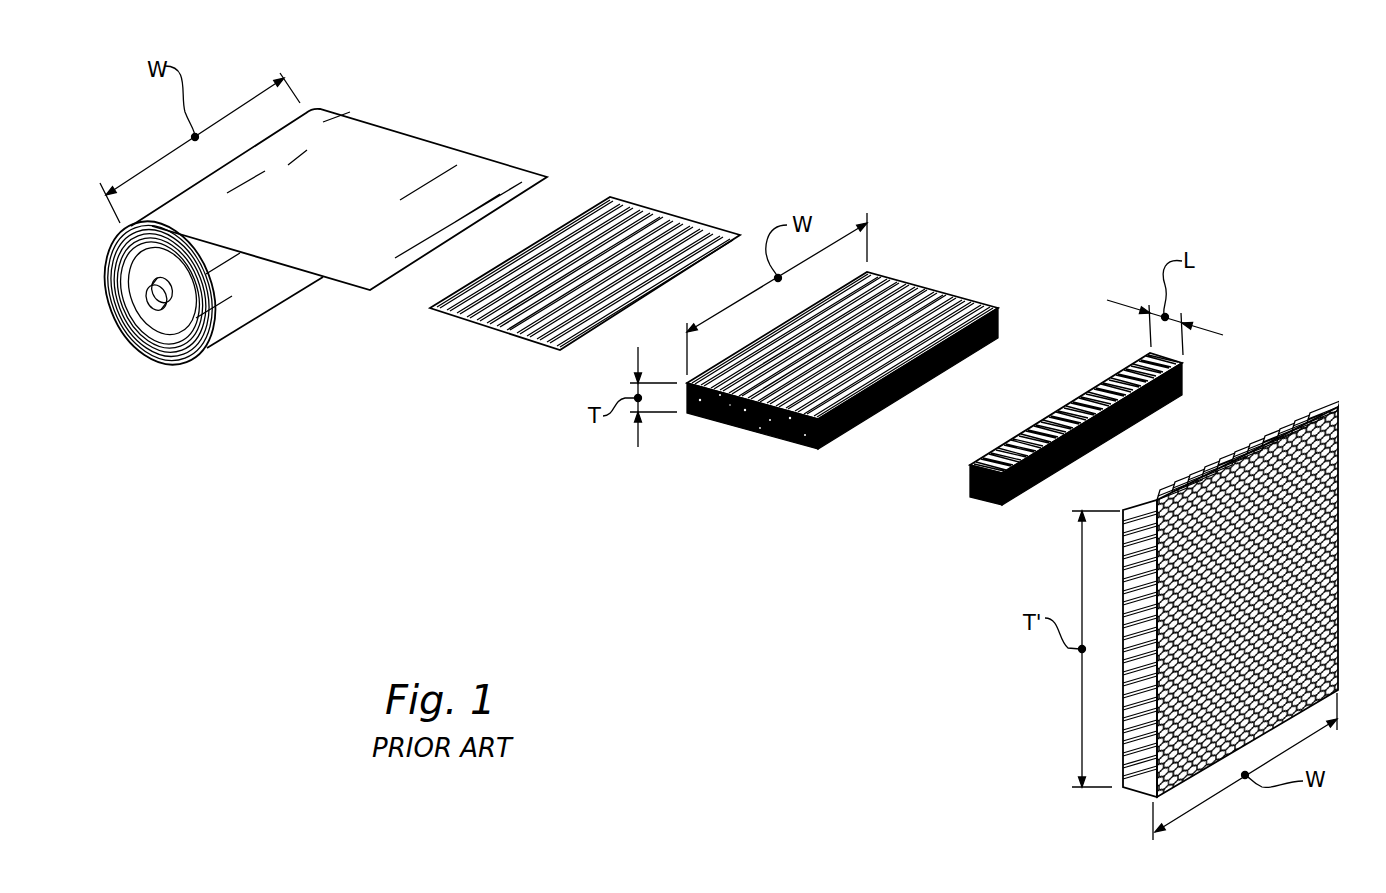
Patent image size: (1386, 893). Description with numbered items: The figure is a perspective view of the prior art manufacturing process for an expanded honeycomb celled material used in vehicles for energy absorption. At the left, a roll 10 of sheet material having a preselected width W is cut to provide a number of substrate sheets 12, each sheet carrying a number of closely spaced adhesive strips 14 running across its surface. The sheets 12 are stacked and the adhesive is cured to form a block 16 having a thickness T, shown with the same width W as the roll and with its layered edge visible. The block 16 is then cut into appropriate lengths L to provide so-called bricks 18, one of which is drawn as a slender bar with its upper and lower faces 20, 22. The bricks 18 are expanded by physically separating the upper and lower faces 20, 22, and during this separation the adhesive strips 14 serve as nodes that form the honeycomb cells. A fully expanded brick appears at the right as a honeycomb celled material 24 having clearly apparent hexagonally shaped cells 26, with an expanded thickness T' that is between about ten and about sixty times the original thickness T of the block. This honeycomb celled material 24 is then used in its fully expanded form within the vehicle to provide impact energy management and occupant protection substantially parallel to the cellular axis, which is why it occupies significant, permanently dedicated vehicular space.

The roll 10 is at (254, 365).
The substrate sheets 12 is at (585, 291).
The adhesive strips 14 is at (647, 237).
The block 16 is at (754, 449).
The bricks 18 is at (1053, 483).
The upper face 20 is at (1065, 410).
The lower face 22 is at (1150, 415).
The honeycomb celled material 24 is at (1252, 532).
The hexagonally shaped cells 26 is at (1243, 575).